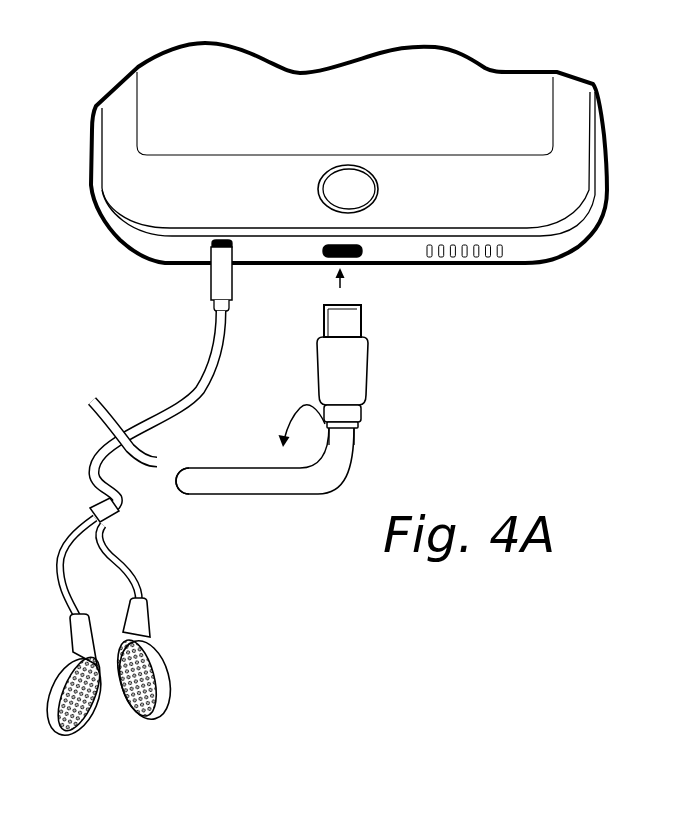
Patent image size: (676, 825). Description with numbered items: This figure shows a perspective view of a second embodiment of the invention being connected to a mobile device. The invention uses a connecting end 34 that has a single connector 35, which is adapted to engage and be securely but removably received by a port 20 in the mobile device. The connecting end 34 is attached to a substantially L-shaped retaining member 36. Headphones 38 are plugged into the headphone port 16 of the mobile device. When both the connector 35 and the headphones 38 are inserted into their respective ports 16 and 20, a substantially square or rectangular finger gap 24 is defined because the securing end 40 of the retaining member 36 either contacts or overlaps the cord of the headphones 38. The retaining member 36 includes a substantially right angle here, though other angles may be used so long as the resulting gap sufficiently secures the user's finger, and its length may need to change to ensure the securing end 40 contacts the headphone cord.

The headphone port 16 is at (182, 263).
The port 20 is at (360, 262).
The finger gap 24 is at (323, 425).
The connecting end 34 is at (367, 341).
The connector 35 is at (332, 318).
The retaining member 36 is at (276, 483).
The headphones 38 is at (182, 404).
The securing end 40 is at (174, 480).